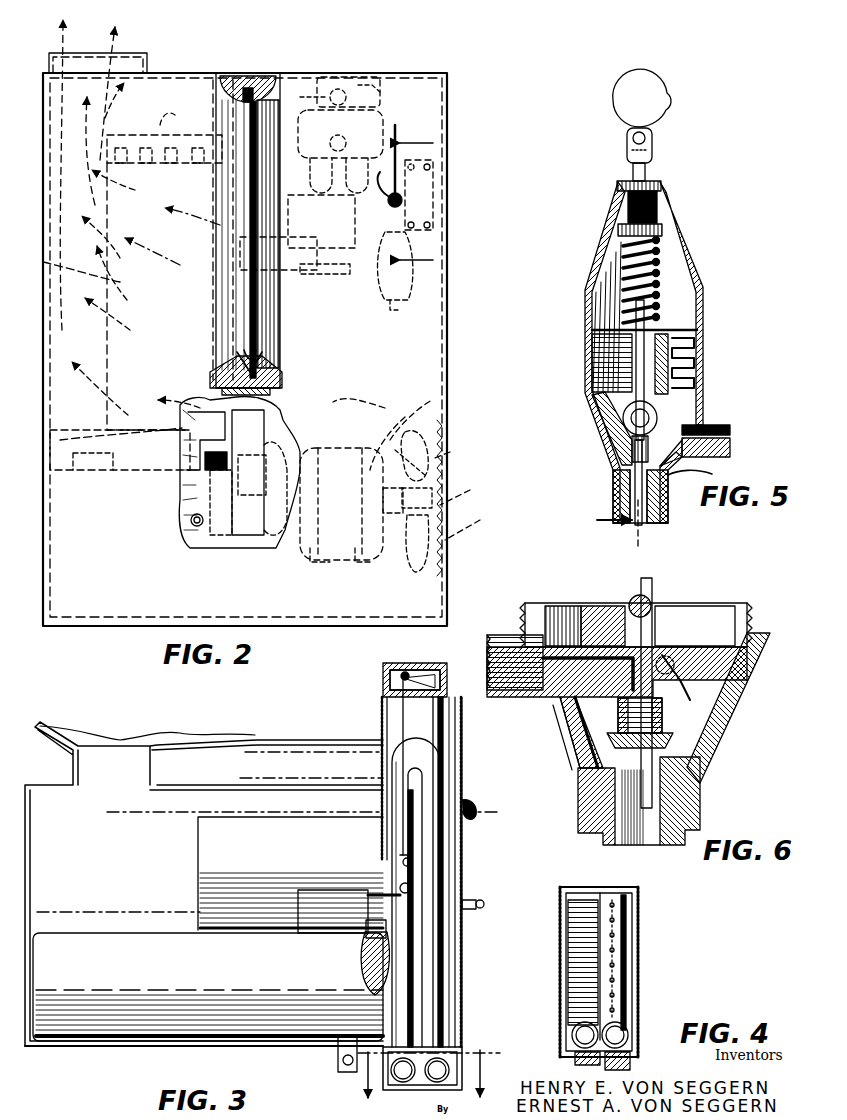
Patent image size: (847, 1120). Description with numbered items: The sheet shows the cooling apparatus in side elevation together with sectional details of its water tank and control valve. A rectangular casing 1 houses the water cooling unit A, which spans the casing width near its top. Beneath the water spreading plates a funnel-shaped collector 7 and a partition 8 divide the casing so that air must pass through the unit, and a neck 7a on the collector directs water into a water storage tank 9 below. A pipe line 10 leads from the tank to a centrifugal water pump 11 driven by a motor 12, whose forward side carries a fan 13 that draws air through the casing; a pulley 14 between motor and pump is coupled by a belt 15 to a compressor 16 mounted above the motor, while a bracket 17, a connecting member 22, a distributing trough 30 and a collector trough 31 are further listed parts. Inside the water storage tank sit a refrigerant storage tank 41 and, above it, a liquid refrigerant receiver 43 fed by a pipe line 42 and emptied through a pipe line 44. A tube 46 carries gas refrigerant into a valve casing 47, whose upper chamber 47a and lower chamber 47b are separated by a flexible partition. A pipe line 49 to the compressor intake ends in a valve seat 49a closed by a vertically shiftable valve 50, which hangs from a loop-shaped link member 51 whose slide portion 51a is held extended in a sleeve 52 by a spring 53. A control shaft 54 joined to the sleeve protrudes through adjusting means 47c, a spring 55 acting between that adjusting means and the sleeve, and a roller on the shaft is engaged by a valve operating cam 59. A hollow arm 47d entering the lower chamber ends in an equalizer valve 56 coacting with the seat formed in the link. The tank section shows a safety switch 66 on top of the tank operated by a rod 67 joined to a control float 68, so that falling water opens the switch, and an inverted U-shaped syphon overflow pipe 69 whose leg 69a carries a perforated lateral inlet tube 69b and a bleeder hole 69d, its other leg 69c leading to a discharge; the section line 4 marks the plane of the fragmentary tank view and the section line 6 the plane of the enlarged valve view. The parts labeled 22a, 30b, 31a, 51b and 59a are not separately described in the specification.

In FIG. 2, the casing 1 is at (445, 343).
In FIG. 2, the collector 7 is at (50, 440).
In FIG. 3, the collector 7 is at (112, 740).
In FIG. 2, the neck 7a is at (90, 63).
In FIG. 3, the neck 7a is at (160, 784).
In FIG. 2, the partition 8 is at (220, 108).
In FIG. 2, the water storage tank 9 is at (235, 530).
In FIG. 3, the water storage tank 9 is at (90, 1050).
In FIG. 2, the pipe line 10 is at (182, 540).
In FIG. 2, the water pump 11 is at (215, 522).
In FIG. 2, the motor 12 is at (320, 453).
In FIG. 2, the fan 13 is at (437, 425).
In FIG. 2, the pulley 14 is at (252, 522).
In FIG. 2, the belt 15 is at (258, 448).
In FIG. 2, the compressor 16 is at (382, 128).
In FIG. 2, the bracket 17 is at (263, 297).
In FIG. 2, the connecting member 22 is at (256, 326).
In FIG. 2, the element terminal 22a is at (284, 104).
In FIG. 2, the distributing trough 30 is at (260, 80).
In FIG. 2, the nozzle orifice 30b is at (248, 88).
In FIG. 2, the collector trough 31 is at (260, 348).
In FIG. 2, the drain outlet 31a is at (266, 362).
In FIG. 2, the water cooling unit A is at (50, 262).
In FIG. 3, the storage tank 41 is at (190, 988).
In FIG. 3, the pipe line 42 is at (480, 900).
In FIG. 3, the liquid refrigerant receiver 43 is at (210, 850).
In FIG. 3, the pipe line 44 is at (478, 800).
In FIG. 5, the tube 46 is at (733, 425).
In FIG. 6, the tube 46 is at (660, 680).
In FIG. 5, the valve casing 47 is at (705, 292).
In FIG. 5, the upper chamber 47a is at (590, 298).
In FIG. 5, the lower chamber 47b is at (598, 412).
In FIG. 6, the lower chamber 47b is at (715, 615).
In FIG. 5, the adjusting means 47c is at (662, 203).
In FIG. 6, the hollow arm 47d is at (570, 625).
In FIG. 5, the pipe line 49 is at (612, 488).
In FIG. 6, the pipe line 49 is at (692, 770).
In FIG. 5, the valve seat 49a is at (680, 475).
In FIG. 5, the valve 50 is at (712, 462).
In FIG. 6, the valve 50 is at (583, 770).
In FIG. 5, the link member 51 is at (690, 395).
In FIG. 6, the link member 51 is at (652, 596).
In FIG. 5, the slide portion 51a is at (625, 462).
In FIG. 6, the slide portion 51a is at (670, 672).
In FIG. 5, the stem sleeve 51b is at (700, 372).
In FIG. 5, the sleeve 52 is at (703, 345).
In FIG. 5, the spring 53 is at (675, 330).
In FIG. 5, the control shaft 54 is at (655, 252).
In FIG. 5, the spring 55 is at (655, 272).
In FIG. 6, the spring 55 is at (650, 698).
In FIG. 5, the equalizer valve 56 is at (625, 425).
In FIG. 5, the valve operating cam 59 is at (660, 86).
In FIG. 5, the clevis 59a is at (654, 140).
In FIG. 3, the safety switch 66 is at (398, 680).
In FIG. 3, the rod 67 is at (400, 710).
In FIG. 3, the control float 68 is at (312, 890).
In FIG. 3, the syphon overflow pipe 69 is at (440, 1010).
In FIG. 4, the syphon overflow pipe 69 is at (572, 1038).
In FIG. 3, the leg 69a is at (438, 962).
In FIG. 4, the leg 69a is at (625, 1032).
In FIG. 4, the lateral inlet tube 69b is at (614, 966).
In FIG. 3, the leg 69c is at (438, 875).
In FIG. 4, the leg 69c is at (578, 1068).
In FIG. 3, the bleeder hole 69d is at (445, 790).
In FIG. 3, the section line 4 is at (419, 1075).
In FIG. 5, the section line 6 is at (604, 524).